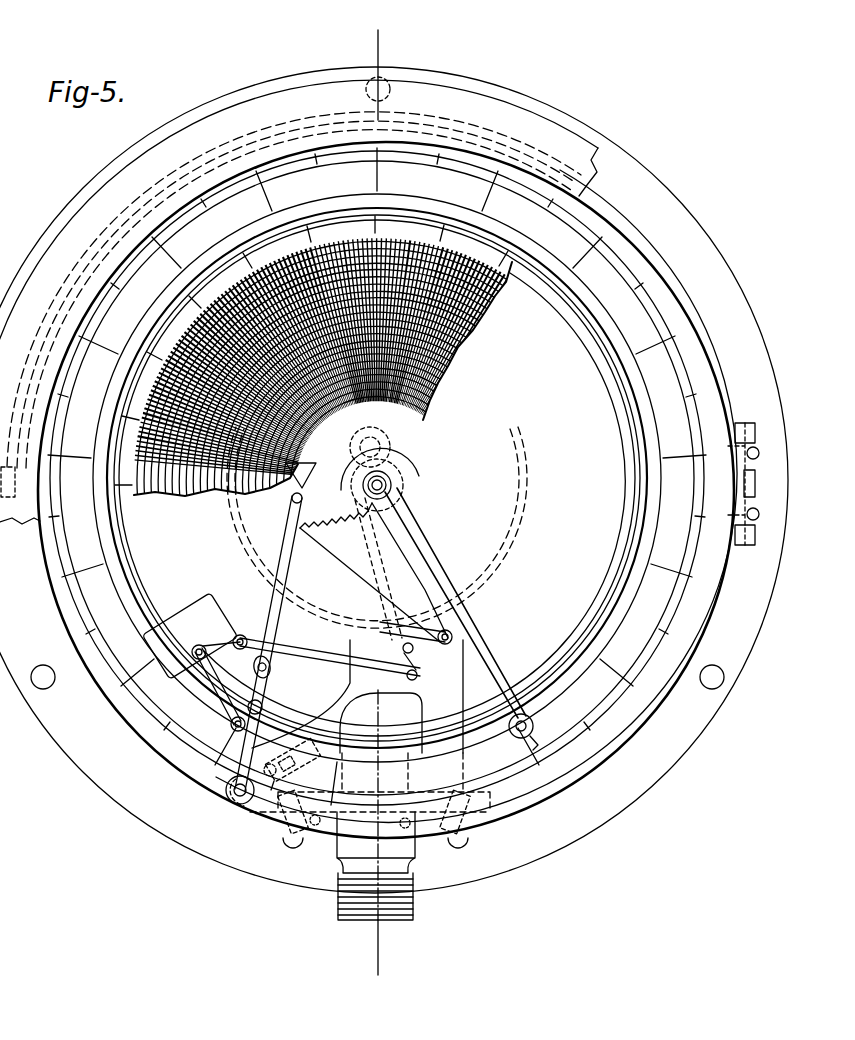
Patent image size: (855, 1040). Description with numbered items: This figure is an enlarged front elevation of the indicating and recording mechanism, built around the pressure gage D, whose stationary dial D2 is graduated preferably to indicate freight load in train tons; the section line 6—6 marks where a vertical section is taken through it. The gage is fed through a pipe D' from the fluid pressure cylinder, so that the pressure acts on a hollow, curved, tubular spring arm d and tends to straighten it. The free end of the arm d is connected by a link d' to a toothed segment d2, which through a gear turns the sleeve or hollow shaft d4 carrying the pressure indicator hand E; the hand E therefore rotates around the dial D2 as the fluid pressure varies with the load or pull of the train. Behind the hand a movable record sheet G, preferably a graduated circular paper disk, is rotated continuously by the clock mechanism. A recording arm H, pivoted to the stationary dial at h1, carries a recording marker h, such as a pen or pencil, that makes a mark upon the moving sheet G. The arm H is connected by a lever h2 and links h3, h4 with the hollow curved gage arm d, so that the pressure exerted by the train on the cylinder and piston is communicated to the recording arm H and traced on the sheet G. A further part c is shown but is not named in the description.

The section line 6— 6 is at (378, 505).
The pressure gage D is at (394, 480).
The stationary dial D2 is at (662, 378).
The pipe D' is at (370, 791).
The hollow tubular spring arm d is at (377, 476).
The link d' is at (346, 651).
The toothed segment d2 is at (338, 520).
The sleeve or hollow shaft d4 is at (392, 485).
The movable record sheet G is at (455, 348).
The pressure indicator hand E is at (470, 658).
The recording arm H is at (274, 603).
The recording marker h is at (302, 476).
The pivot h1 is at (235, 800).
The lever h2 is at (262, 812).
The link h3 is at (225, 706).
The link h4 is at (258, 676).
The adjusting member c is at (292, 759).